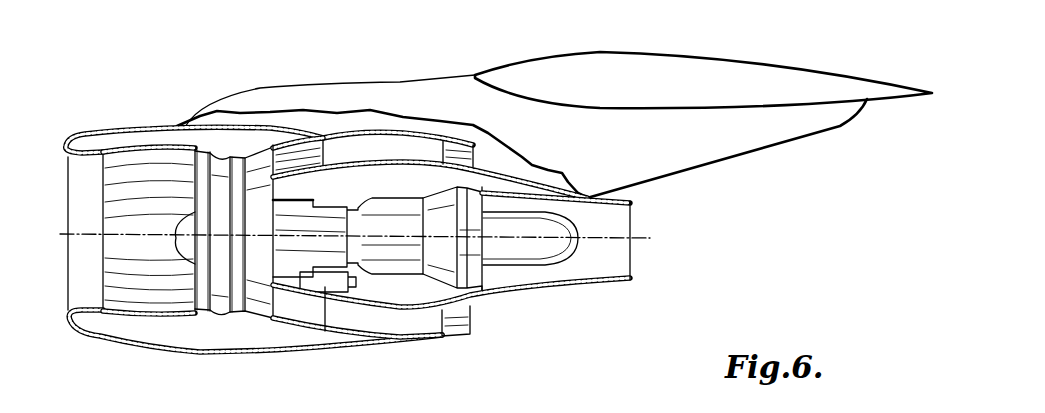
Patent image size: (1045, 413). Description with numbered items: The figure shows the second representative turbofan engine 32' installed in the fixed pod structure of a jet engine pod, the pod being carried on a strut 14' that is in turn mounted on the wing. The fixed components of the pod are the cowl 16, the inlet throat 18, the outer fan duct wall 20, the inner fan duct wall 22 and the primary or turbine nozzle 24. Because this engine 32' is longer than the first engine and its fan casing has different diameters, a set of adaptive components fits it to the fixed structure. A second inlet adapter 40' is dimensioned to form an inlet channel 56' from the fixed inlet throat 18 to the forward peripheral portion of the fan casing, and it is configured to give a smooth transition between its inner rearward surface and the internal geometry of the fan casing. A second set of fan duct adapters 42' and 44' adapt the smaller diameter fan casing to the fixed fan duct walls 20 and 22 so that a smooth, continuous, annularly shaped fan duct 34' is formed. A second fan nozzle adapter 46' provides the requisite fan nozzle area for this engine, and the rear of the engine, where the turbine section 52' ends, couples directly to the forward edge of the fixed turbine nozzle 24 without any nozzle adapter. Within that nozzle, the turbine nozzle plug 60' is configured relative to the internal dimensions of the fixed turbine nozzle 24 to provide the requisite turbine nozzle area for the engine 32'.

The strut 14' is at (382, 119).
The cowl 16 is at (158, 131).
The inlet throat 18 is at (80, 167).
The outer fan duct wall 20 is at (357, 147).
The inner fan duct wall 22 is at (390, 163).
The primary or turbine nozzle 24 is at (571, 276).
The second representative engine 32' is at (377, 234).
The fan duct 34' is at (451, 336).
The second inlet adapter 40' is at (149, 116).
The fan duct adapter 42' is at (430, 122).
The fan duct adapter 44' is at (298, 174).
The second fan nozzle adapter 46' is at (451, 348).
The turbine exit 52' is at (504, 306).
The inlet channel 56' is at (137, 270).
The turbine nozzle plug 60' is at (578, 238).